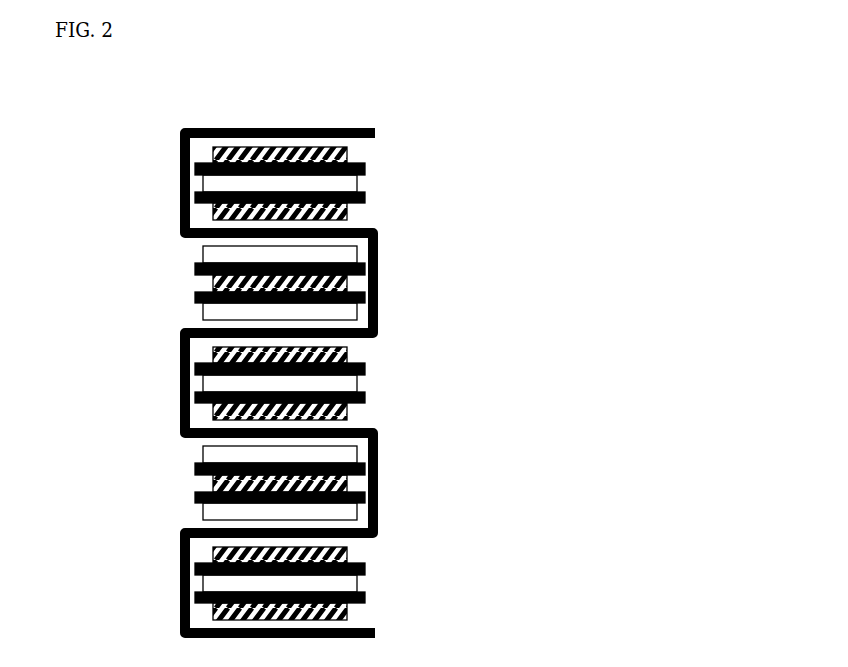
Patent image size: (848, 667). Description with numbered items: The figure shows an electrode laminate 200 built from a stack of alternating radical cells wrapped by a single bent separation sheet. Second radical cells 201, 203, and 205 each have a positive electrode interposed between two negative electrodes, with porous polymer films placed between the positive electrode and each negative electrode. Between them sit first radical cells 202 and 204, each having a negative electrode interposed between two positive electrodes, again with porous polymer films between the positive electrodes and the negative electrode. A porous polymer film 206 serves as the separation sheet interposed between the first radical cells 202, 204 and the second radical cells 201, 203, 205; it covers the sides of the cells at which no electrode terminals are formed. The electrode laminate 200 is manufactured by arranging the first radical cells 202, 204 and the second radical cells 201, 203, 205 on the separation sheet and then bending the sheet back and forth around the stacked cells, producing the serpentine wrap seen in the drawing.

The electrode laminate 200 is at (107, 120).
The second radical cell 201 is at (347, 150).
The first radical cell 202 is at (355, 252).
The second radical cell 203 is at (347, 352).
The first radical cell 204 is at (355, 455).
The second radical cell 205 is at (347, 550).
The porous polymer film 206 is at (375, 633).